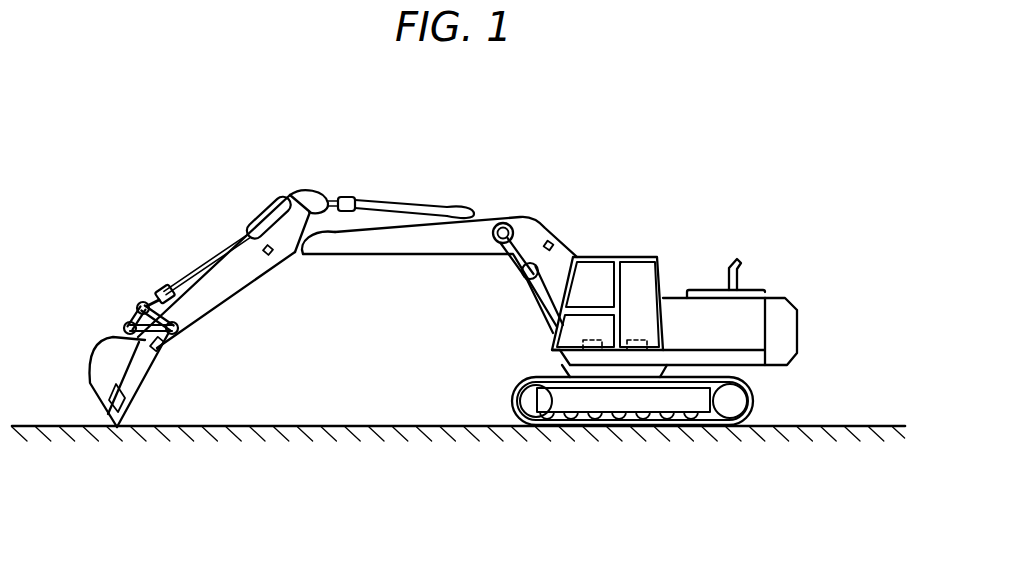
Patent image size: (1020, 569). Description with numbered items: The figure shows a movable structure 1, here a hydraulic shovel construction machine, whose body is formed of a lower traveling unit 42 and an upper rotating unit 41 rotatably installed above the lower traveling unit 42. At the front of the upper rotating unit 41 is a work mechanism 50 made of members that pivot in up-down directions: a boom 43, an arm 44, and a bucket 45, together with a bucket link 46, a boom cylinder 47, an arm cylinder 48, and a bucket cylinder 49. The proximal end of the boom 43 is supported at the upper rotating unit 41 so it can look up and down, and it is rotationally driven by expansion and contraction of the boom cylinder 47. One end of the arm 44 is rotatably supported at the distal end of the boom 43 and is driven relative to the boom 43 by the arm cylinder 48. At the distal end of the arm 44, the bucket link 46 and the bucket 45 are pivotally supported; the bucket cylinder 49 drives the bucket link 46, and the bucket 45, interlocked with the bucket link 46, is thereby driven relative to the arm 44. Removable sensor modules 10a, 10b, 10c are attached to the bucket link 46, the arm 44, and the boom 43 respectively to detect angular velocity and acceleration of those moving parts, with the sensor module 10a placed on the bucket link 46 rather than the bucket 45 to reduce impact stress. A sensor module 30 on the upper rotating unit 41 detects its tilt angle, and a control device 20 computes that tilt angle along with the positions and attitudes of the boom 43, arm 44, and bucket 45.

The movable structure 1 is at (812, 143).
The sensor module 10a is at (165, 349).
The sensor module 10b is at (268, 258).
The sensor module 10c is at (556, 247).
The control device 20 is at (638, 352).
The sensor module 30 is at (597, 352).
The upper rotating unit 41 is at (786, 336).
The lower traveling unit 42 is at (747, 402).
The boom 43 is at (532, 224).
The arm 44 is at (287, 192).
The bucket 45 is at (99, 357).
The bucket link 46 is at (153, 291).
The boom cylinder 47 is at (523, 280).
The arm cylinder 48 is at (393, 202).
The bucket cylinder 49 is at (199, 258).
The work mechanism 50 is at (524, 192).